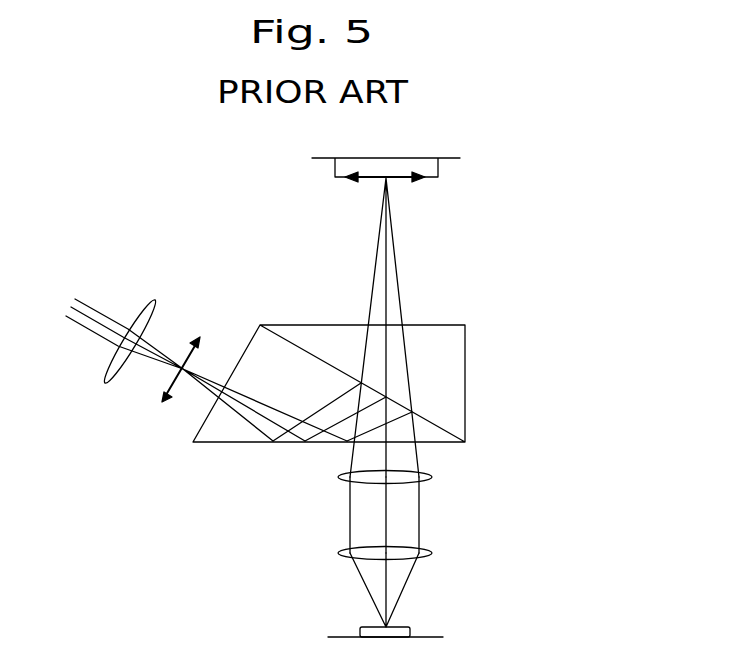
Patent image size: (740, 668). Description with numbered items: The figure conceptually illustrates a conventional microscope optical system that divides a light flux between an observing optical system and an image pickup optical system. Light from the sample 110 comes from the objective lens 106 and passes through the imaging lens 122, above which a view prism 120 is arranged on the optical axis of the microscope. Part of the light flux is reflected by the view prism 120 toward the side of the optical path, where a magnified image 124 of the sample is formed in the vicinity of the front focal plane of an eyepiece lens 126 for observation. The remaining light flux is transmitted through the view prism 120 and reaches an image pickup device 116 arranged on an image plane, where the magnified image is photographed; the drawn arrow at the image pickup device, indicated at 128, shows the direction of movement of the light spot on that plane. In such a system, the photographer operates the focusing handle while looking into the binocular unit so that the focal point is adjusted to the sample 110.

The image pickup device 116 is at (440, 165).
The light spot movement on photodetector 128 is at (400, 182).
The view prism 120 is at (465, 352).
The eyepiece lens 126 is at (146, 315).
The magnified image 124 is at (168, 392).
The imaging lens 122 is at (432, 477).
The objective lens 106 is at (432, 553).
The sample 110 is at (400, 625).